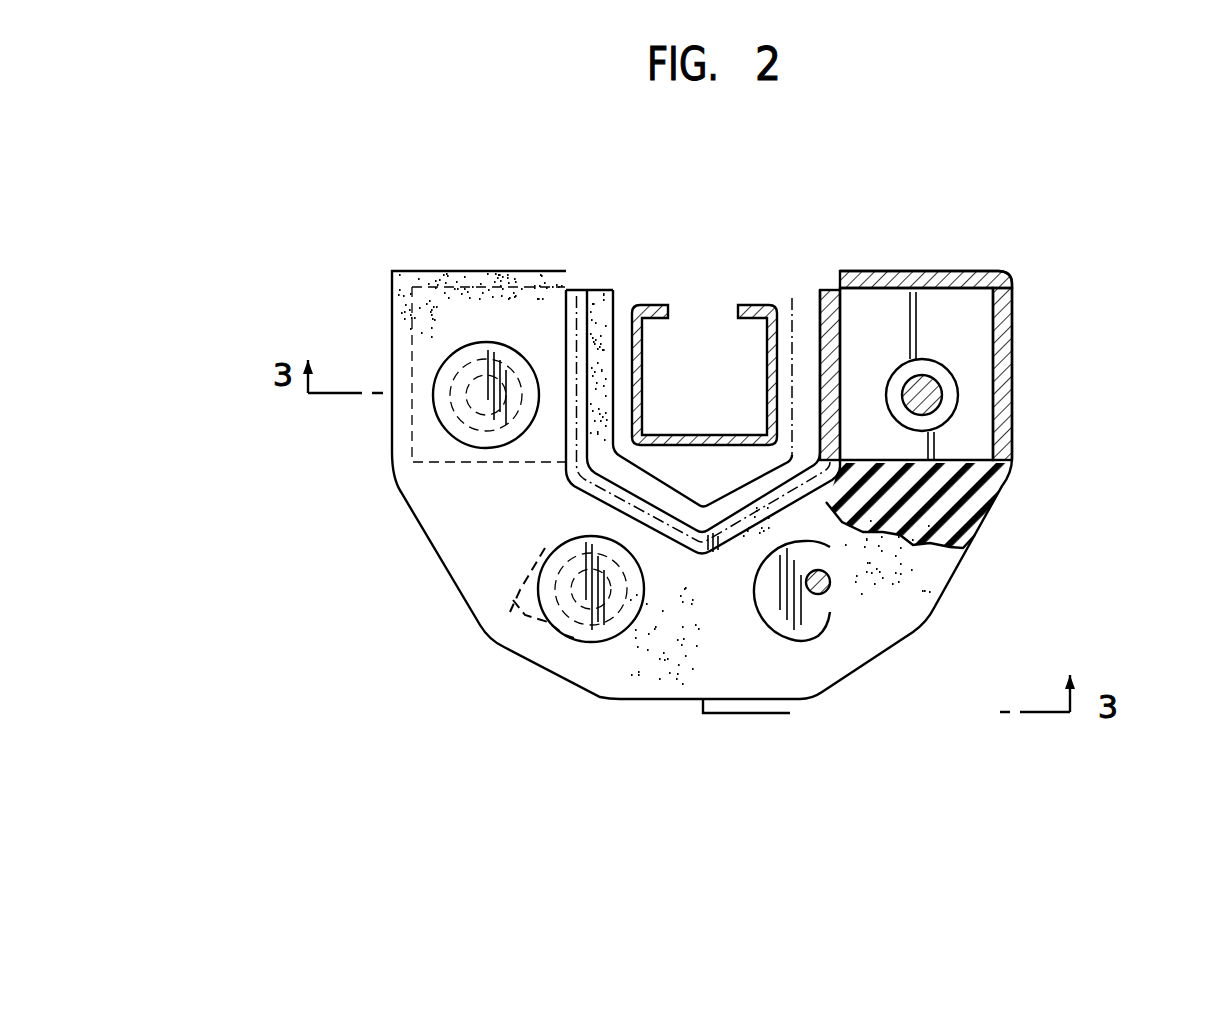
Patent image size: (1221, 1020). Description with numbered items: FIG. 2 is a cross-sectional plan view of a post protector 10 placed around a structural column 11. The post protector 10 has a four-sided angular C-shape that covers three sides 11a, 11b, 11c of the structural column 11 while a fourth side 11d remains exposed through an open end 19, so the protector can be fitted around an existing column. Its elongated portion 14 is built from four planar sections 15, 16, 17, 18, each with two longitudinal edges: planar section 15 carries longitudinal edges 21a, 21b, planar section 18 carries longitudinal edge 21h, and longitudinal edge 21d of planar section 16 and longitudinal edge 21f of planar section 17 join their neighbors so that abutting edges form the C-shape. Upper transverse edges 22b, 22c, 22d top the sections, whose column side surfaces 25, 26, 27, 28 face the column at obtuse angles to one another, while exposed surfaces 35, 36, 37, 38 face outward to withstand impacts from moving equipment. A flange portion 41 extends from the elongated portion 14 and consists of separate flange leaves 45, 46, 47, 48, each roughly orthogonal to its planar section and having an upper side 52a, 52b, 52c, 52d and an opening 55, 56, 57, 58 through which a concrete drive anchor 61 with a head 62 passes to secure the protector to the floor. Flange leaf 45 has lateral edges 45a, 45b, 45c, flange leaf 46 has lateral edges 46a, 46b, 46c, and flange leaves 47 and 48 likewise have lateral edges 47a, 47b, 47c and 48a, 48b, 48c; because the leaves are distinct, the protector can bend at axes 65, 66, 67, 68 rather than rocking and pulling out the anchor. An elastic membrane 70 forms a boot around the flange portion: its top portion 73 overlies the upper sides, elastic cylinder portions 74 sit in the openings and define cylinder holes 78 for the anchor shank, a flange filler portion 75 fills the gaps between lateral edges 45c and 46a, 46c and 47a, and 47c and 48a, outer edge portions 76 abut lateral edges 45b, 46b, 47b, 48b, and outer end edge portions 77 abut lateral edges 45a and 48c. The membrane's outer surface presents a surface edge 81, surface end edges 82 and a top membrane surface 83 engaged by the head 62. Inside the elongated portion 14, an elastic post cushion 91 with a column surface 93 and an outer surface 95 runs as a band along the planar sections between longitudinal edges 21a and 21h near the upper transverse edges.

The post protector 10 is at (312, 604).
The structural column 11 is at (690, 298).
The side of structural column 11a is at (770, 357).
The side of structural column 11b is at (704, 440).
The side of structural column 11c is at (742, 300).
The fourth side of structural column 11d is at (642, 382).
The elongated portion 14 is at (560, 303).
The planar section 15 is at (943, 288).
The planar section 16 is at (748, 648).
The planar section 17 is at (555, 548).
The planar section 18 is at (553, 293).
The open end 19 is at (620, 288).
The longitudinal edge 21a is at (838, 296).
The longitudinal edge 21b is at (832, 478).
The longitudinal edge 21d is at (672, 565).
The longitudinal edge 21f is at (587, 507).
The longitudinal edge 21h is at (580, 290).
The upper transverse edge 22b is at (778, 640).
The upper transverse edge 22c is at (605, 645).
The upper transverse edge 22d is at (567, 447).
The column side surface 25 is at (755, 217).
The column side surface 26 is at (792, 505).
The column side surface 27 is at (638, 512).
The column side surface 28 is at (578, 356).
The exposed surface 35 is at (955, 323).
The exposed surface 36 is at (742, 560).
The exposed surface 37 is at (525, 640).
The exposed surface 38 is at (545, 288).
The flange portion 41 is at (1013, 400).
The flange leaf 45 is at (997, 280).
The lateral edge 45a is at (893, 288).
The lateral edge 45b is at (995, 438).
The lateral edge 45c is at (997, 477).
The flange leaf 46 is at (880, 665).
The lateral edge 46a is at (890, 612).
The lateral edge 46b is at (875, 665).
The lateral edge 46c is at (785, 698).
The flange leaf 47 is at (555, 630).
The lateral edge 47a is at (615, 640).
The lateral edge 47b is at (560, 650).
The lateral edge 47c is at (515, 580).
The flange leaf 48 is at (418, 303).
The lateral edge 48a is at (455, 458).
The lateral edge 48b is at (455, 418).
The lateral edge 48c is at (520, 282).
The upper side 52a is at (850, 322).
The upper side 52b is at (885, 655).
The upper side 52c is at (580, 645).
The upper side 52d is at (425, 320).
The opening 55 is at (947, 378).
The opening 56 is at (880, 625).
The opening 57 is at (520, 608).
The opening 58 is at (443, 440).
The concrete drive anchor 61 is at (955, 352).
The head 62 is at (437, 393).
The axis 65 is at (820, 300).
The axis 66 is at (923, 580).
The axis 67 is at (560, 520).
The axis 68 is at (578, 400).
The elastic membrane 70 is at (1007, 498).
The top portion 73 is at (565, 460).
The elastic cylinder portion 74 is at (942, 398).
The flange filler portion 75 is at (985, 498).
The outer edge portion 76 is at (410, 380).
The outer end edge portion 77 is at (557, 296).
The cylinder hole 78 is at (913, 407).
The surface edge 81 is at (960, 548).
The surface end edge 82 is at (912, 292).
The top membrane surface 83 is at (435, 345).
The elastic post cushion 91 is at (593, 285).
The column surface 93 is at (633, 298).
The outer surface 95 is at (662, 525).